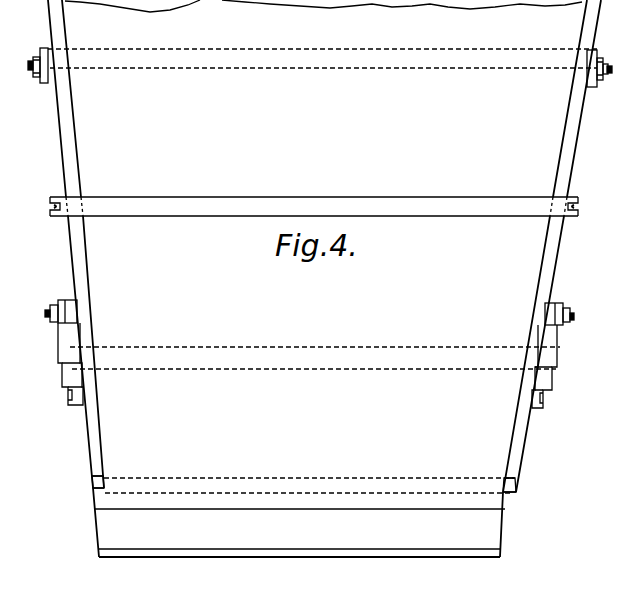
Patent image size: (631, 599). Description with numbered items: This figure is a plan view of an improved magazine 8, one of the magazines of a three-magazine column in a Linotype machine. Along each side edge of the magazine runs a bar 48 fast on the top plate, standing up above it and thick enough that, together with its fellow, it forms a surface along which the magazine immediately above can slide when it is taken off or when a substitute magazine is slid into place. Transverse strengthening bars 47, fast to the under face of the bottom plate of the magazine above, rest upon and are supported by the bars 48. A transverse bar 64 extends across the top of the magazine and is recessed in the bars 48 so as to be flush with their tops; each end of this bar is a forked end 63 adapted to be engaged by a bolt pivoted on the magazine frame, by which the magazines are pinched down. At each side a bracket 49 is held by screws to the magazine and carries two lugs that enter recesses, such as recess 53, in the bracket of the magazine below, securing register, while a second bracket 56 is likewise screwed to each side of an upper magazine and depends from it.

The magazine 8 is at (324, 278).
The transverse strengthening bars 47 is at (367, 49).
The bar 48 is at (92, 455).
The bracket 49 is at (68, 338).
The recess 53 is at (75, 312).
The second bracket 56 is at (50, 77).
The forked end 63 is at (52, 213).
The transverse bar 64 is at (316, 197).